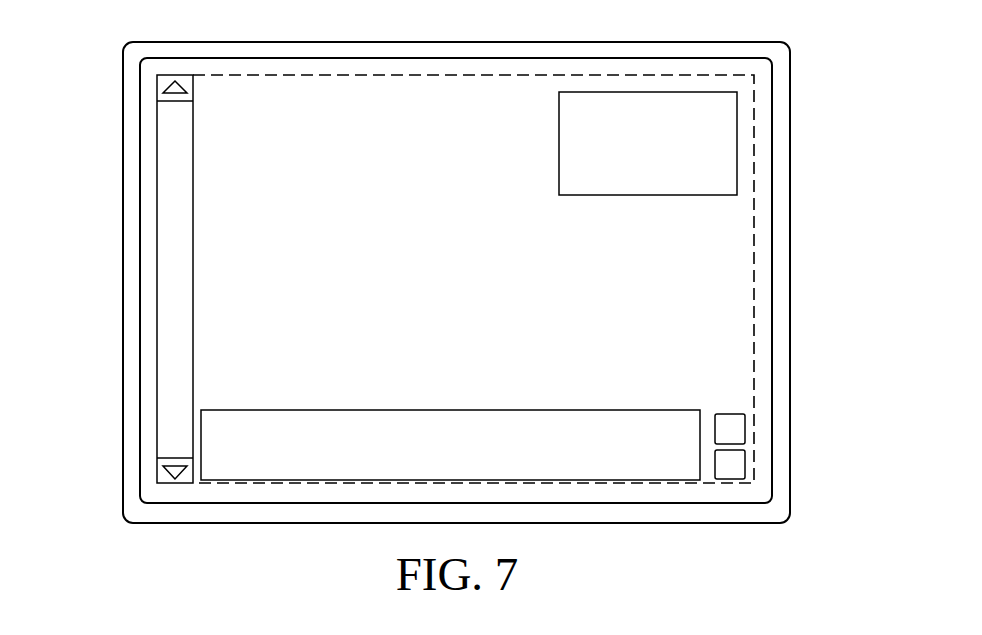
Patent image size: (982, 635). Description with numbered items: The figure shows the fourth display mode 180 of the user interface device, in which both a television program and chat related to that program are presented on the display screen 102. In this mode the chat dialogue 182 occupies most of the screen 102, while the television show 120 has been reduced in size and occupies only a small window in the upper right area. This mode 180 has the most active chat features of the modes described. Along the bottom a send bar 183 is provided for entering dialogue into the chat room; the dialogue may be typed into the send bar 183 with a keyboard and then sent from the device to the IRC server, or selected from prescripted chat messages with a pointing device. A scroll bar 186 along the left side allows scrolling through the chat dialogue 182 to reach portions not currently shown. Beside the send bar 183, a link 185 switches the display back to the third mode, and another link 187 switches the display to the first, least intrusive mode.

The display screen 102 is at (140, 98).
The television show 120 is at (737, 143).
The fourth display mode 180 is at (826, 281).
The chat dialogue 182 is at (436, 347).
The send bar 183 is at (600, 410).
The link 185 is at (746, 428).
The scroll bar 186 is at (193, 178).
The link 187 is at (746, 463).